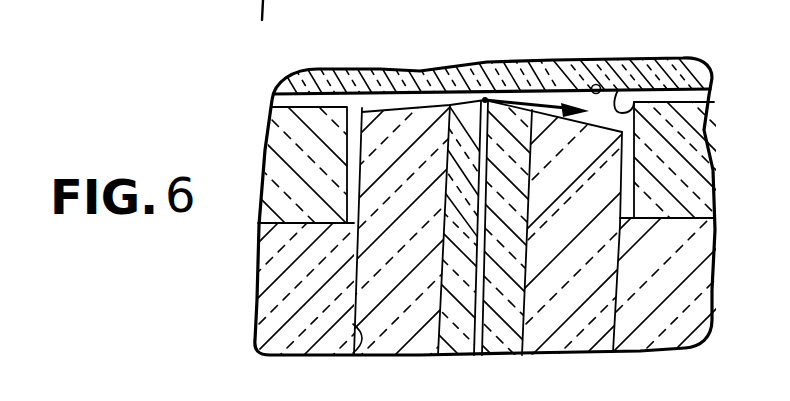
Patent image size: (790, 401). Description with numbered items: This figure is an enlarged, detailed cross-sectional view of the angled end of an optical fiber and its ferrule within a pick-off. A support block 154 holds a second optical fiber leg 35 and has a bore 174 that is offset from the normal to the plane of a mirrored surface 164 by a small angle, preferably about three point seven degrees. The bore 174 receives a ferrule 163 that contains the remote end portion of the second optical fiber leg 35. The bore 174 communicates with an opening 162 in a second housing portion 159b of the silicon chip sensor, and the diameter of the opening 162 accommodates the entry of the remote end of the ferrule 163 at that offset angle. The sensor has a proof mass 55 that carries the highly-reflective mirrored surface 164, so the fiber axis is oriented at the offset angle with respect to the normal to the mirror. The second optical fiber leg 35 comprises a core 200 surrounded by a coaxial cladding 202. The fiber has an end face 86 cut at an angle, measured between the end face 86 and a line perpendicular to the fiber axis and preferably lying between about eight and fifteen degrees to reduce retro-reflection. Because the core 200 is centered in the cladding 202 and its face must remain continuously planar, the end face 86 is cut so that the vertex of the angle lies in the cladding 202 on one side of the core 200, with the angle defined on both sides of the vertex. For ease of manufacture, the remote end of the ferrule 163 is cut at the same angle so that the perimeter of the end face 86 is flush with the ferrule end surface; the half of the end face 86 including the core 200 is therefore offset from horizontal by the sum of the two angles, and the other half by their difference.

The second optical fiber leg 35 is at (258, 3).
The proof mass 55 is at (414, 70).
The angled end surface 86 is at (486, 98).
The mirrored surface 164 is at (600, 86).
The opening 162 is at (633, 97).
The second housing portion 159b is at (272, 141).
The support block 154 is at (258, 276).
The bore 174 is at (347, 355).
The ferrule 163 is at (388, 355).
The core 200 is at (473, 356).
The cladding 202 is at (500, 355).